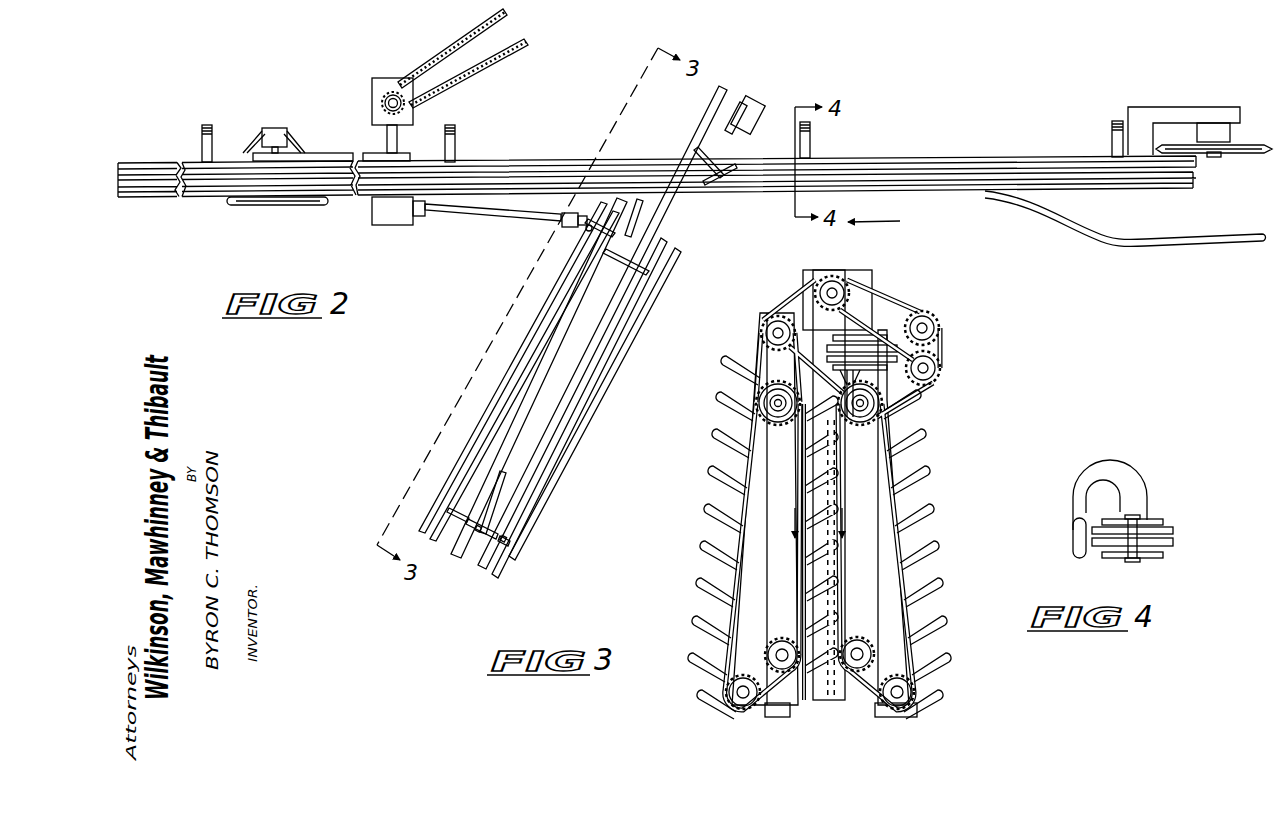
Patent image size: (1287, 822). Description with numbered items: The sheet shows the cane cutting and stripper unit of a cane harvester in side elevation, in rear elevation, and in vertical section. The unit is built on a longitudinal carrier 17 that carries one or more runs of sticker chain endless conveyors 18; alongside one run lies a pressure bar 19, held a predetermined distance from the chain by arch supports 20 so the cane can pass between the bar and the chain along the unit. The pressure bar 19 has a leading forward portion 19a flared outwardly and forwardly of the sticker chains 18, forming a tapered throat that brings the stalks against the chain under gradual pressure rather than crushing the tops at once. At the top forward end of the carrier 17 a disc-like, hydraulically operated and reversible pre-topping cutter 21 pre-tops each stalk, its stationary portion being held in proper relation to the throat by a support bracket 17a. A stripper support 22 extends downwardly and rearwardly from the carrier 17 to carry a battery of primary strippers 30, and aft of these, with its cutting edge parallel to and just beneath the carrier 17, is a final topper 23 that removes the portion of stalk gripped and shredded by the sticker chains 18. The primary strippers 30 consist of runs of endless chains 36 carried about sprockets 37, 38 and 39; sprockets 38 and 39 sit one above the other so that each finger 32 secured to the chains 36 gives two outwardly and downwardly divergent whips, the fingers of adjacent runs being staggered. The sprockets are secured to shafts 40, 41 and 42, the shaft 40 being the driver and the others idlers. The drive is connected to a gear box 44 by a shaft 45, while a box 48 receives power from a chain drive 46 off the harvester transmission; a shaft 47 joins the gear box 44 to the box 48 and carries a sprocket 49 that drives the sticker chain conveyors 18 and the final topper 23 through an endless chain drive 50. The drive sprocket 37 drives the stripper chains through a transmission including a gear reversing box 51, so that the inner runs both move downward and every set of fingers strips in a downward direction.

In FIG. 2, the longitudinal carrier 17 is at (868, 174).
In FIG. 4, the longitudinal carrier 17 is at (1158, 522).
In FIG. 2, the support bracket 17a is at (1165, 115).
In FIG. 2, the sticker chain endless conveyors 18 is at (994, 180).
In FIG. 4, the sticker chain endless conveyors 18 is at (1173, 534).
In FIG. 4, the pressure bar 19 is at (1078, 538).
In FIG. 2, the leading forward portion of pressure bar 19a is at (1174, 244).
In FIG. 2, the arch supports 20 is at (207, 126).
In FIG. 4, the arch supports 20 is at (1104, 476).
In FIG. 2, the pre-topping cutter 21 is at (1241, 154).
In FIG. 2, the stripper support 22 is at (560, 373).
In FIG. 3, the stripper support 22 is at (773, 557).
In FIG. 2, the final topper 23 is at (275, 129).
In FIG. 2, the primary strippers 30 is at (573, 332).
In FIG. 3, the primary strippers 30 is at (925, 436).
In FIG. 3, the finger 32 is at (719, 488).
In FIG. 2, the endless chains 36 is at (496, 402).
In FIG. 3, the endless chains 36 is at (713, 541).
In FIG. 3, the drive sprocket 37 is at (778, 411).
In FIG. 3, the sprocket 38 is at (858, 637).
In FIG. 3, the sprocket 39 is at (746, 675).
In FIG. 2, the driver shaft 40 is at (566, 230).
In FIG. 3, the driver shaft 40 is at (900, 405).
In FIG. 3, the idler shaft 41 is at (825, 700).
In FIG. 3, the idler shaft 42 is at (895, 709).
In FIG. 2, the gear box 44 is at (396, 225).
In FIG. 2, the shaft 45 is at (493, 216).
In FIG. 2, the chain drive 46 is at (467, 71).
In FIG. 2, the shaft 47 is at (397, 139).
In FIG. 2, the gear box 48 is at (372, 86).
In FIG. 2, the sprocket 49 is at (372, 153).
In FIG. 2, the endless chain drive 50 is at (328, 153).
In FIG. 2, the gear reversing box 51 is at (746, 112).